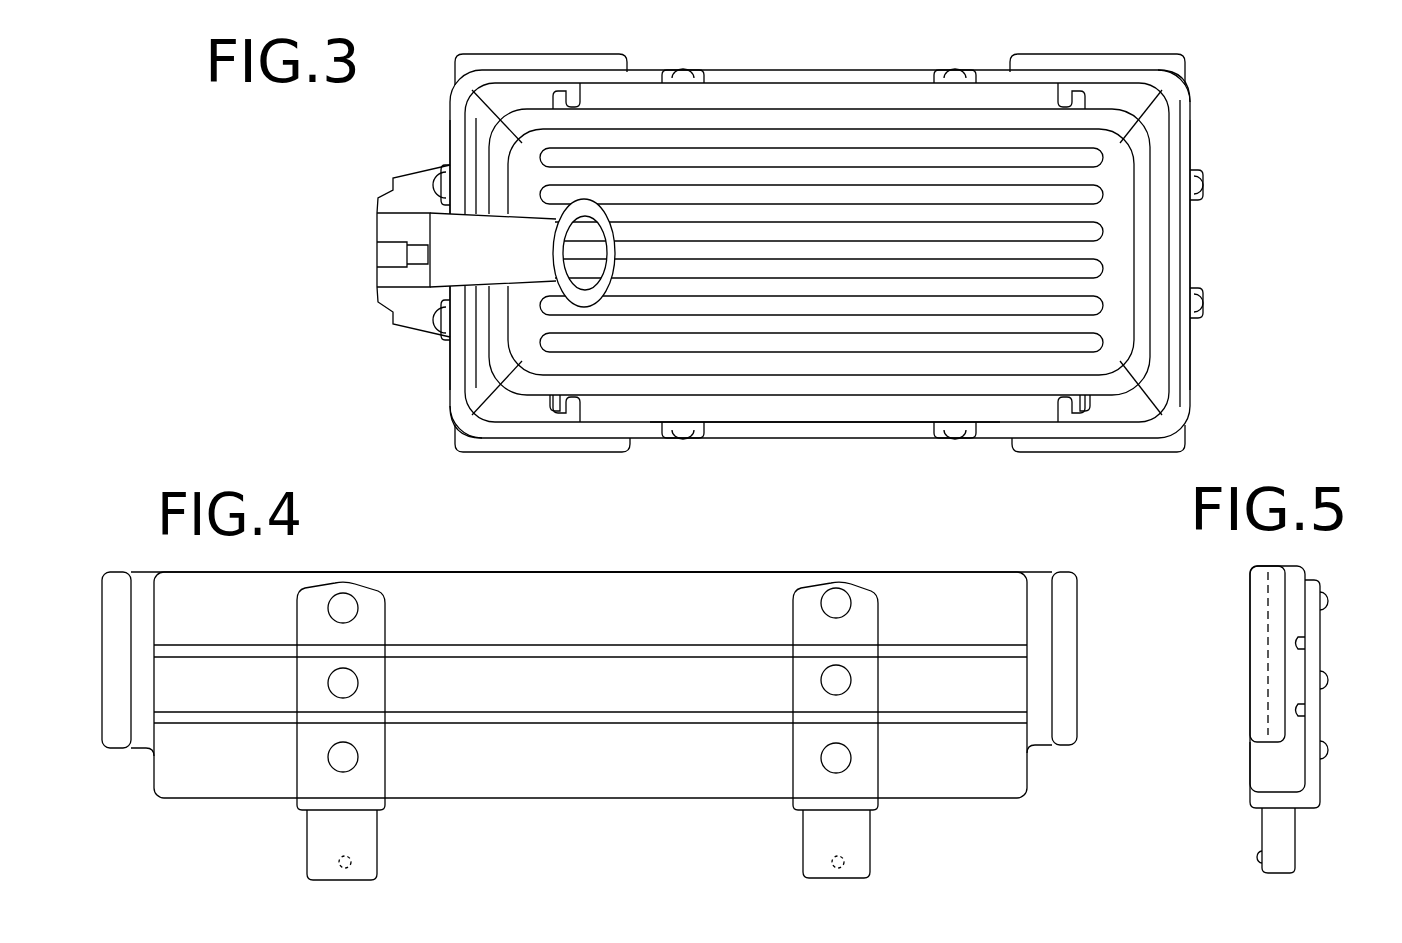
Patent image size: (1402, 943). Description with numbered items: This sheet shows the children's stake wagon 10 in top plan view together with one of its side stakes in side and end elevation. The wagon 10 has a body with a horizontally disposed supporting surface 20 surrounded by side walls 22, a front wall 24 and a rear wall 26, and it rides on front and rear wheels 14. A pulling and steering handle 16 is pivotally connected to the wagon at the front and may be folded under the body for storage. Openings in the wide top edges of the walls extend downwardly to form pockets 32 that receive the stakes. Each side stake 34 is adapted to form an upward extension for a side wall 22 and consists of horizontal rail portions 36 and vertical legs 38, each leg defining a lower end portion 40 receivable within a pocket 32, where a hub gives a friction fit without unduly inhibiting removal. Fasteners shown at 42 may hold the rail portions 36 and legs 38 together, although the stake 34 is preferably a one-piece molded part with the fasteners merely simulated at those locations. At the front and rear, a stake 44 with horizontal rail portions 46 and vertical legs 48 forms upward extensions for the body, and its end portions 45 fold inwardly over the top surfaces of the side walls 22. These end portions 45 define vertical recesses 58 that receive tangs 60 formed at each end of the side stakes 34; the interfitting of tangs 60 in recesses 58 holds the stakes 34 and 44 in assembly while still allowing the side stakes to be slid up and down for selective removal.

In FIG. 3, the children's stake wagon 10 is at (470, 470).
In FIG. 3, the front and rear wheels 14 is at (1060, 455).
In FIG. 3, the pulling and steering handle 16 is at (455, 237).
In FIG. 3, the supporting surface 20 is at (720, 145).
In FIG. 3, the side walls 22 is at (795, 70).
In FIG. 3, the front wall 24 is at (455, 375).
In FIG. 3, the rear wall 26 is at (1192, 230).
In FIG. 5, the pockets 32 is at (1240, 690).
In FIG. 3, the side stake 34 is at (760, 430).
In FIG. 4, the side stake 34 is at (590, 578).
In FIG. 3, the horizontal rail portions 36 is at (890, 95).
In FIG. 4, the horizontal rail portions 36 is at (470, 605).
In FIG. 4, the vertical legs 38 is at (870, 760).
In FIG. 5, the vertical legs 38 is at (1310, 720).
In FIG. 4, the lower end portion 40 is at (360, 845).
In FIG. 5, the lower end portion 40 is at (1275, 828).
In FIG. 3, the fasteners 42 is at (1203, 318).
In FIG. 4, the fasteners 42 is at (345, 683).
In FIG. 5, the fasteners 42 is at (1320, 598).
In FIG. 3, the front and rear stake 44 is at (1197, 128).
In FIG. 3, the end portions 45 is at (1135, 100).
In FIG. 3, the horizontal rail portions 46 is at (1170, 380).
In FIG. 3, the vertical legs 48 is at (450, 182).
In FIG. 3, the vertical recesses 58 is at (580, 410).
In FIG. 3, the tangs 60 is at (557, 403).
In FIG. 4, the tangs 60 is at (115, 655).
In FIG. 5, the tangs 60 is at (1280, 690).